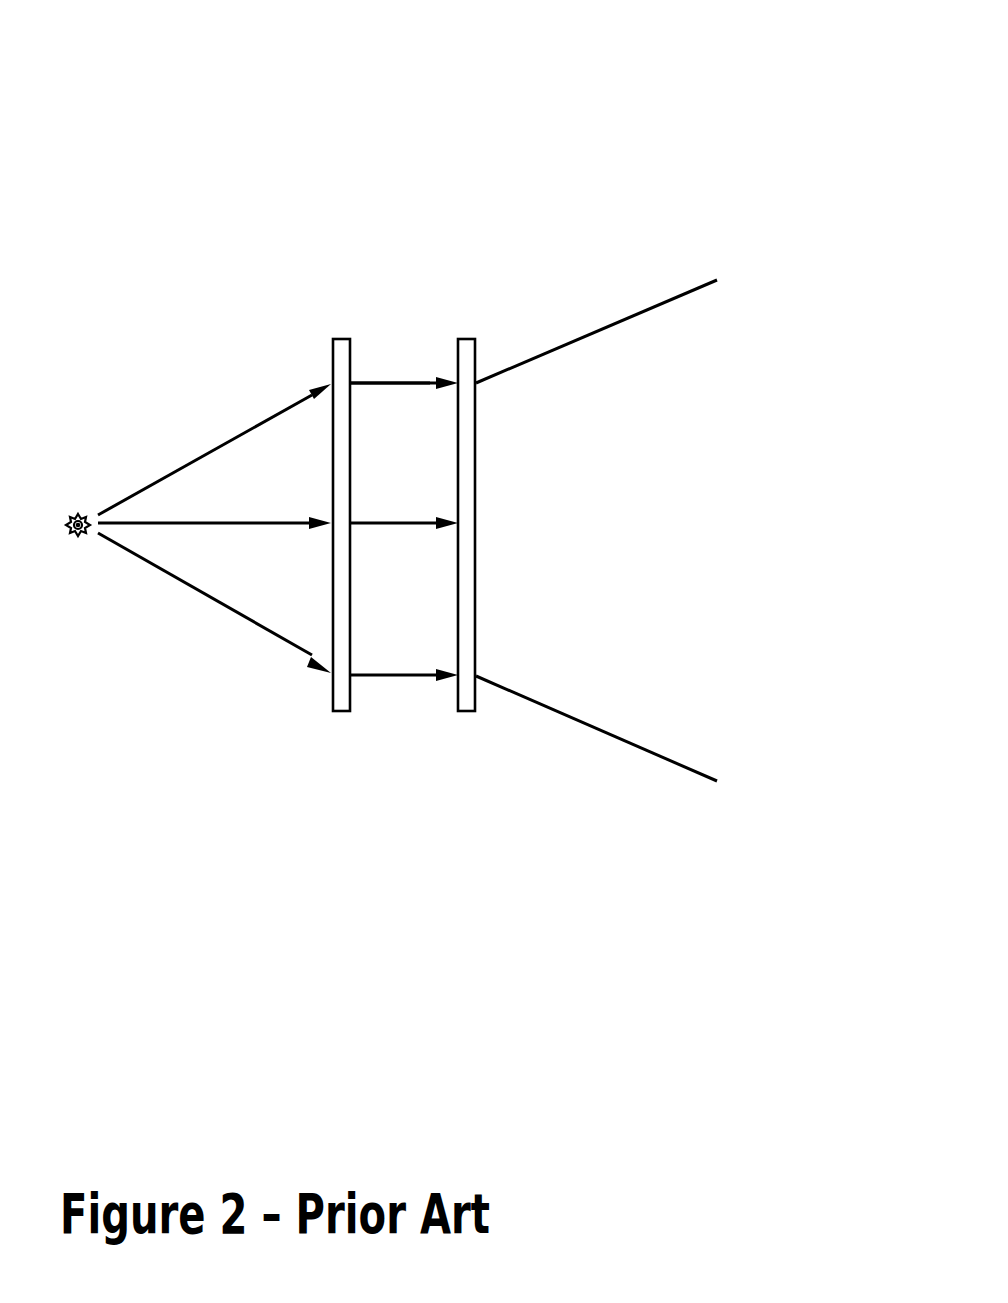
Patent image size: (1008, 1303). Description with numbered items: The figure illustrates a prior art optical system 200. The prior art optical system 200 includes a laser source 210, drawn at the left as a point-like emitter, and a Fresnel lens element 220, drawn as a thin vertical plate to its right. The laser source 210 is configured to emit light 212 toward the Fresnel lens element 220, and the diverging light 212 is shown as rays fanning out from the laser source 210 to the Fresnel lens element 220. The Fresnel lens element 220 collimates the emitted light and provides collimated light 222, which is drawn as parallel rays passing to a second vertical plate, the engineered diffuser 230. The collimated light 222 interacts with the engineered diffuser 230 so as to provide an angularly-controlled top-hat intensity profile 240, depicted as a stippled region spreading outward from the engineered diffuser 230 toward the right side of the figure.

The prior art optical system 200 is at (555, 72).
The laser source 210 is at (79, 514).
The light 212 is at (244, 432).
The Fresnel lens element 220 is at (341, 339).
The collimated light 222 is at (432, 379).
The engineered diffuser 230 is at (468, 339).
The angularly-controlled top-hat intensity profile 240 is at (716, 280).